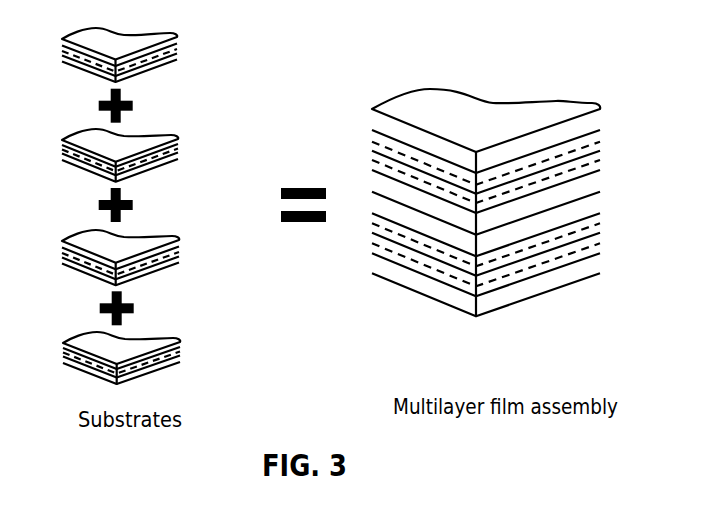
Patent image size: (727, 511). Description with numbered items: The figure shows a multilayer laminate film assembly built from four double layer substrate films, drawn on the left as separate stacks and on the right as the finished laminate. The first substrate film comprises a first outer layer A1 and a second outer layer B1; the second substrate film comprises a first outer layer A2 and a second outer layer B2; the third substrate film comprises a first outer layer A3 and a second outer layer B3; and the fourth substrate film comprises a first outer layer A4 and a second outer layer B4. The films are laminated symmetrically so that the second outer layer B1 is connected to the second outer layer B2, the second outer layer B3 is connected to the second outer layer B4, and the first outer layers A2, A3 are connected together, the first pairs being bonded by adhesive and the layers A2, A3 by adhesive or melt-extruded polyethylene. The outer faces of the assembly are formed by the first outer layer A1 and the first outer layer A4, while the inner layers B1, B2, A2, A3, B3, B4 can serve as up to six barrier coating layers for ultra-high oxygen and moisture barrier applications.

The first outer layer of the first substrate film A1 is at (331, 100).
The second outer layer of the first substrate film B1 is at (331, 121).
The second outer layer of the second substrate film B2 is at (331, 171).
The first outer layer of the second substrate film A2 is at (331, 194).
The first outer layer of the third substrate film A3 is at (332, 230).
The second outer layer of the third substrate film B3 is at (332, 249).
The second outer layer of the fourth substrate film B4 is at (332, 305).
The first outer layer of the fourth substrate film A4 is at (332, 319).